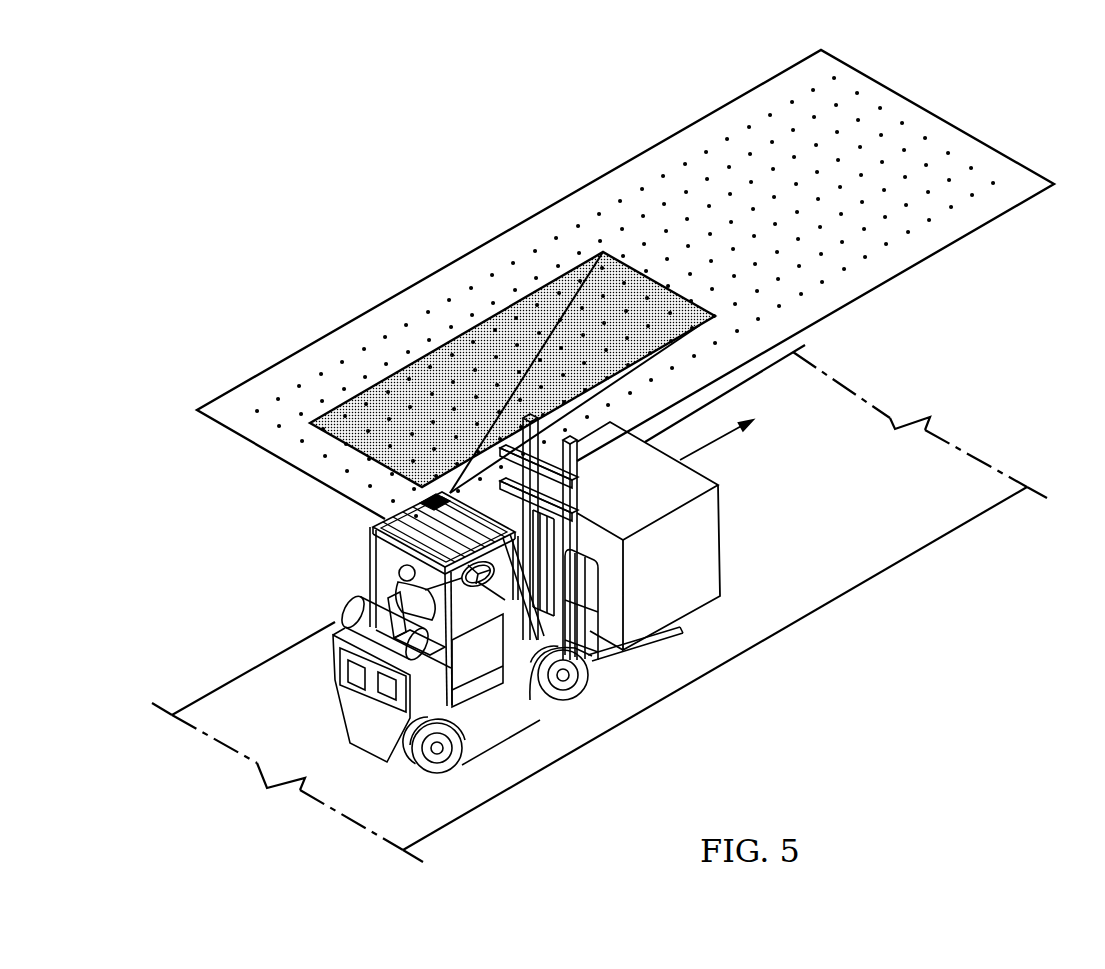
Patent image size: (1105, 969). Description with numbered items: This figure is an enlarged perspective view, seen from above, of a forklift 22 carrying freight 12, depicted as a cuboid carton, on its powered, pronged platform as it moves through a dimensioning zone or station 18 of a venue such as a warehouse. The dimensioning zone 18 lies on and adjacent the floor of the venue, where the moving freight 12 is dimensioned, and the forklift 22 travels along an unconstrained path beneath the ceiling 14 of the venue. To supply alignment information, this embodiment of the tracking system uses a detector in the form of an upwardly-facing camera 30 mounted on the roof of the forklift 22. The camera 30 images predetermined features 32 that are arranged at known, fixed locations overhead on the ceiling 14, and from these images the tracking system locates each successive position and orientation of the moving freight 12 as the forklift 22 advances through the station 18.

The freight 12 is at (717, 540).
The ceiling 14 is at (780, 82).
The dimensioning zone or station 18 is at (542, 752).
The forklift 22 is at (367, 747).
The upwardly-facing camera 30 is at (372, 523).
The predetermined features 32 is at (547, 282).